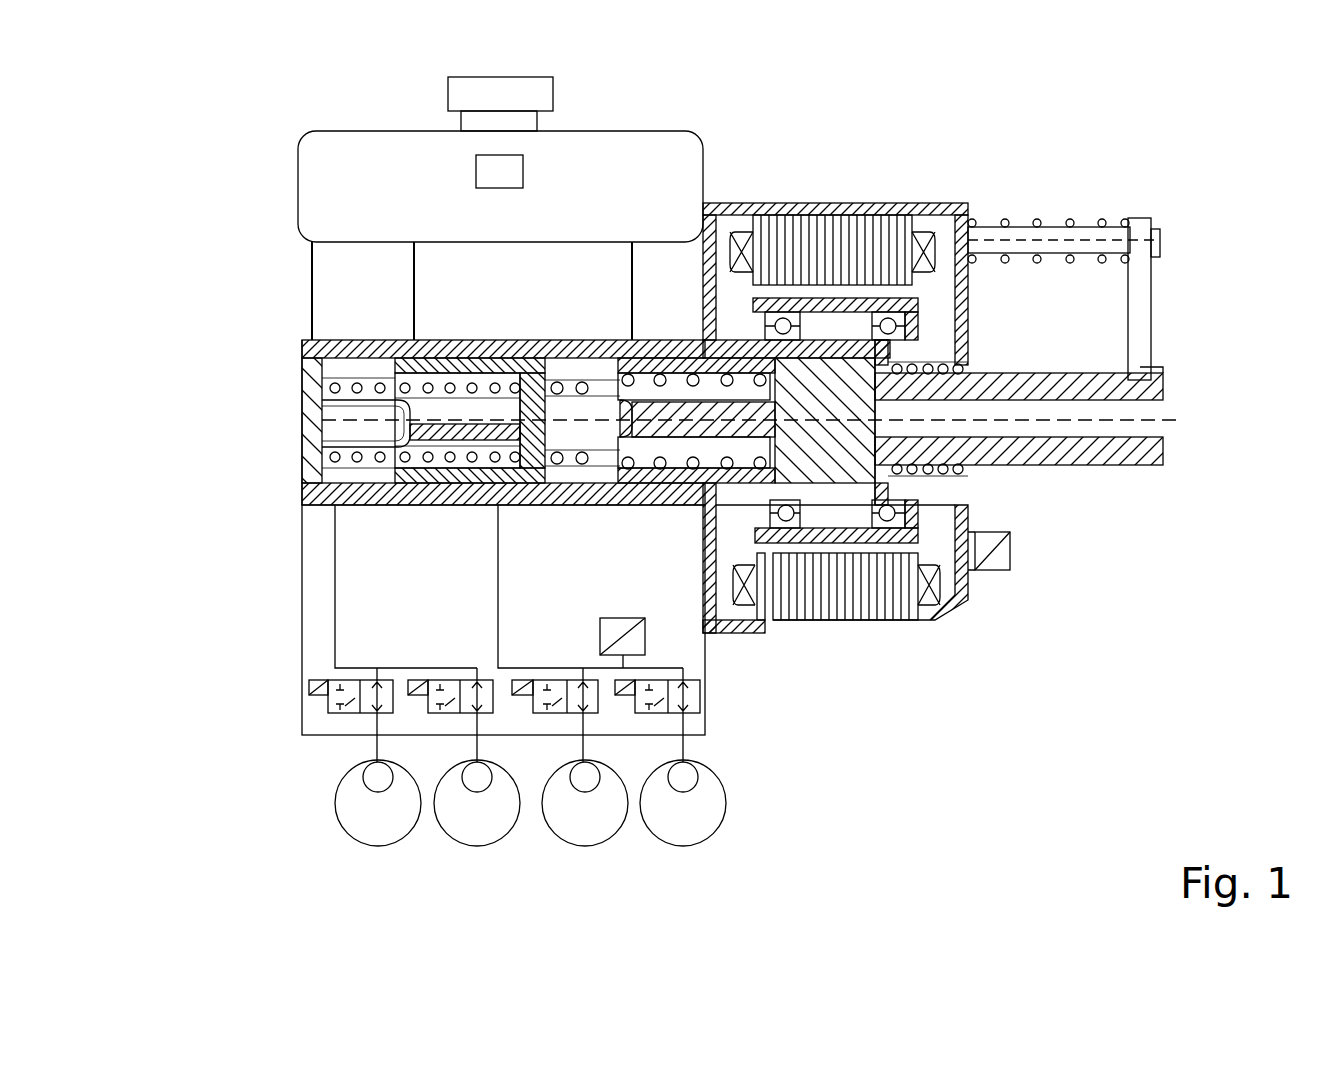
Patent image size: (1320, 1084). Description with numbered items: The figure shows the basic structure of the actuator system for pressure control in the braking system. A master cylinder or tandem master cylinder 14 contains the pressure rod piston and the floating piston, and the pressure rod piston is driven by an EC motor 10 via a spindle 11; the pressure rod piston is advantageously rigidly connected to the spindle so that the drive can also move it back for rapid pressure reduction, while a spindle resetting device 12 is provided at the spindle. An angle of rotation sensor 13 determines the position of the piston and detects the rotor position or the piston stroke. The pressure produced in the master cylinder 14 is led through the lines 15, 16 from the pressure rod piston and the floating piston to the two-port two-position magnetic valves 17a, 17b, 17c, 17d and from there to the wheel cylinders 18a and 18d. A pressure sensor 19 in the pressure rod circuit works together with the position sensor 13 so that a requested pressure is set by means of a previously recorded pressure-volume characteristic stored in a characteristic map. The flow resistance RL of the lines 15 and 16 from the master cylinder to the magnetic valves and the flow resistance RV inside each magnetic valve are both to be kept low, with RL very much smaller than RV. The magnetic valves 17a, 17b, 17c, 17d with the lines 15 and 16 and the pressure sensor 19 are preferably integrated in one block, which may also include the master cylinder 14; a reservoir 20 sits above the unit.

The EC motor 10 is at (820, 240).
The spindle 11 is at (997, 385).
The spindle resetting device 12 is at (1086, 240).
The angle of rotation sensor 13 is at (1010, 548).
The master cylinder (HZ or THZ) 14 is at (358, 372).
The line 15 is at (498, 580).
The line 16 is at (335, 645).
The 2/2-way magnetic valve 17a is at (307, 700).
The 2/2-way magnetic valve 17b is at (443, 700).
The 2/2-way magnetic valve 17c is at (547, 700).
The 2/2-way magnetic valve 17d is at (650, 700).
The wheel cylinder 18a is at (390, 772).
The wheel cylinder 18d is at (672, 775).
The pressure sensor 19 is at (645, 628).
The reservoir 20 is at (636, 165).
The flow resistance RL is at (335, 600).
The flow resistance RV is at (358, 705).